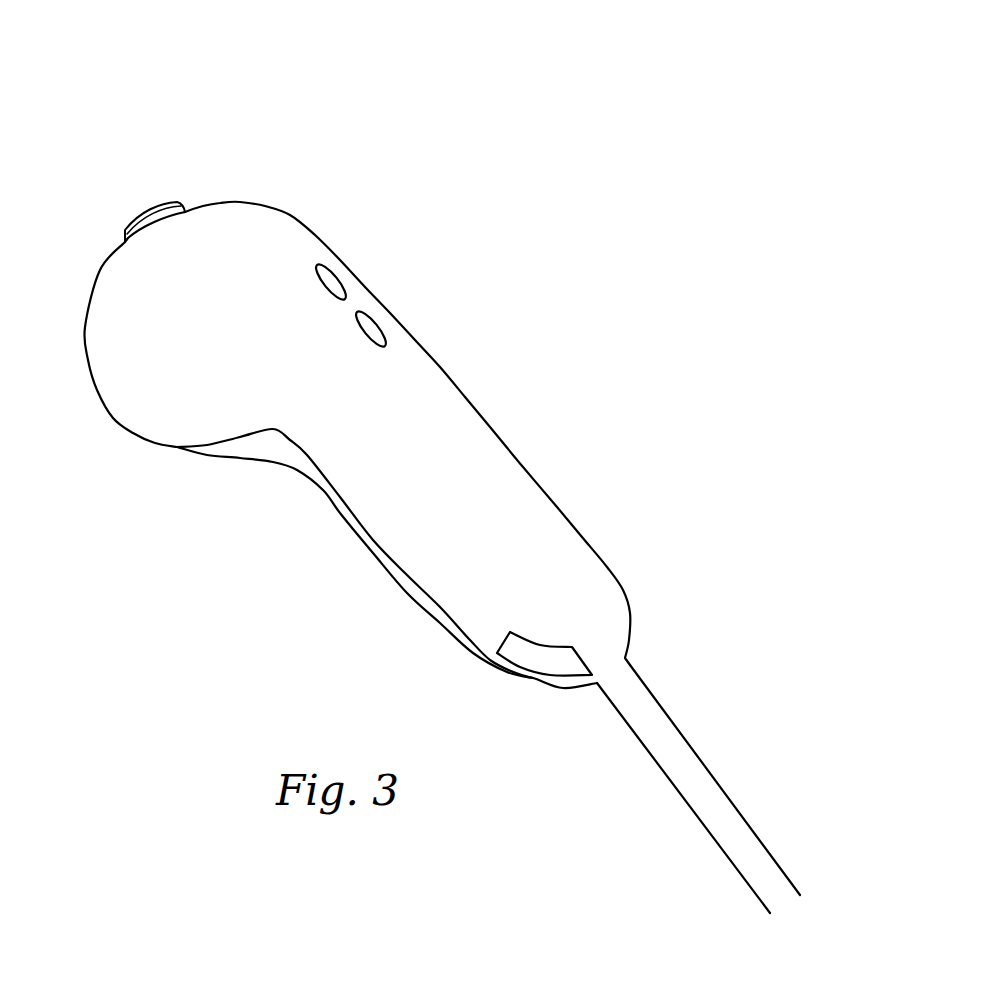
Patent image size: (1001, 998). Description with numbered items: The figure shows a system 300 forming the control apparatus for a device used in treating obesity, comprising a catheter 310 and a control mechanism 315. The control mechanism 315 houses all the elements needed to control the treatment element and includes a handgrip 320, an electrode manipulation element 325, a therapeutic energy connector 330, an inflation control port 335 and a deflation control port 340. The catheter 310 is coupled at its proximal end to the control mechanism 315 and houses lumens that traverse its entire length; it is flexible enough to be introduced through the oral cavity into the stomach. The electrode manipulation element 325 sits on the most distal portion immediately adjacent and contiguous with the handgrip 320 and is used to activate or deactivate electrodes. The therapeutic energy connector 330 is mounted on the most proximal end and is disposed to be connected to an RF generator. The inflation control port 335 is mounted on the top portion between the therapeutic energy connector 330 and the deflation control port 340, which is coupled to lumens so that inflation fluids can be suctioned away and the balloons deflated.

The system 300 is at (116, 127).
The catheter 310 is at (853, 863).
The control mechanism 315 is at (300, 139).
The handgrip 320 is at (232, 202).
The electrode manipulation element 325 is at (543, 677).
The therapeutic energy connector 330 is at (125, 237).
The inflation control port 335 is at (313, 278).
The deflation control port 340 is at (357, 336).